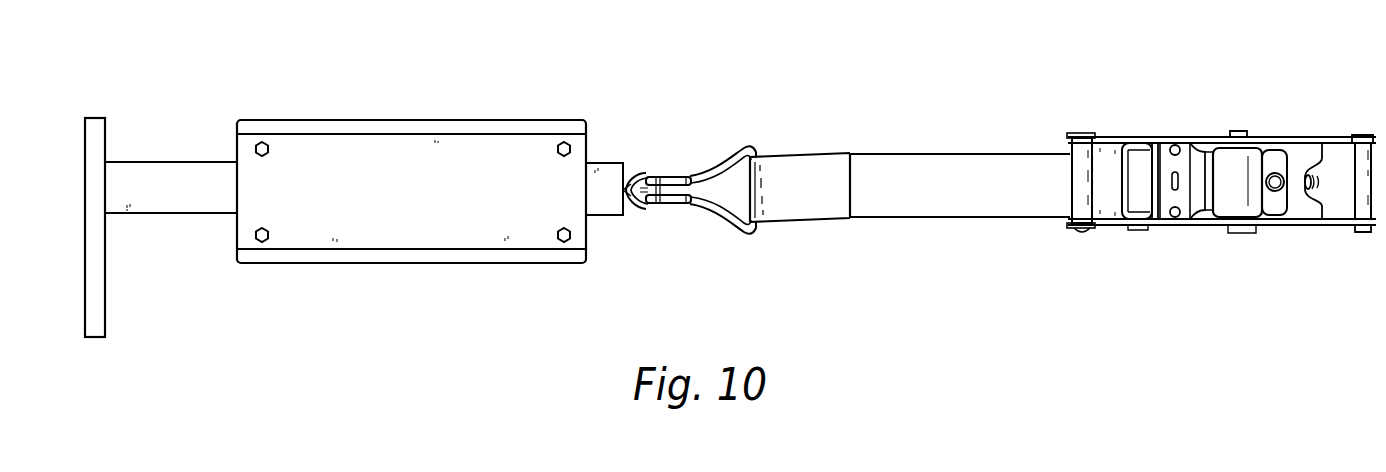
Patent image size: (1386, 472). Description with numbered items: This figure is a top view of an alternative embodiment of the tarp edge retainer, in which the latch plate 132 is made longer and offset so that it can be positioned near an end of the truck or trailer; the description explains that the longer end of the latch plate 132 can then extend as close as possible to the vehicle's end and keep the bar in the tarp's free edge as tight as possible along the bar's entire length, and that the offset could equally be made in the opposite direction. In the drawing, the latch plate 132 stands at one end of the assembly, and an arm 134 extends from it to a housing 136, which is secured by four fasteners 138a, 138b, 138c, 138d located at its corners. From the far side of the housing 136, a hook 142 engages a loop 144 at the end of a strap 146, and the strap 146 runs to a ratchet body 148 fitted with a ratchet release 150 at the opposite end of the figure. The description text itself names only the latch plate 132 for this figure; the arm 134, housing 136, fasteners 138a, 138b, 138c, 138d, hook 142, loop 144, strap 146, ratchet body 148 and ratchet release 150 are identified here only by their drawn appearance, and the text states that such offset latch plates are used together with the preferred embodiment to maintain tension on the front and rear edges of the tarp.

The latch plate 132 is at (85, 207).
The shaft 134 is at (163, 188).
The housing 136 is at (452, 255).
The fastener 138a is at (262, 142).
The fastener 138b is at (262, 242).
The fastener 138c is at (564, 242).
The fastener 138d is at (564, 142).
The hook 142 is at (646, 168).
The loop 144 is at (650, 215).
The strap 146 is at (920, 172).
The ratchet body 148 is at (1138, 228).
The ratchet release 150 is at (1243, 228).